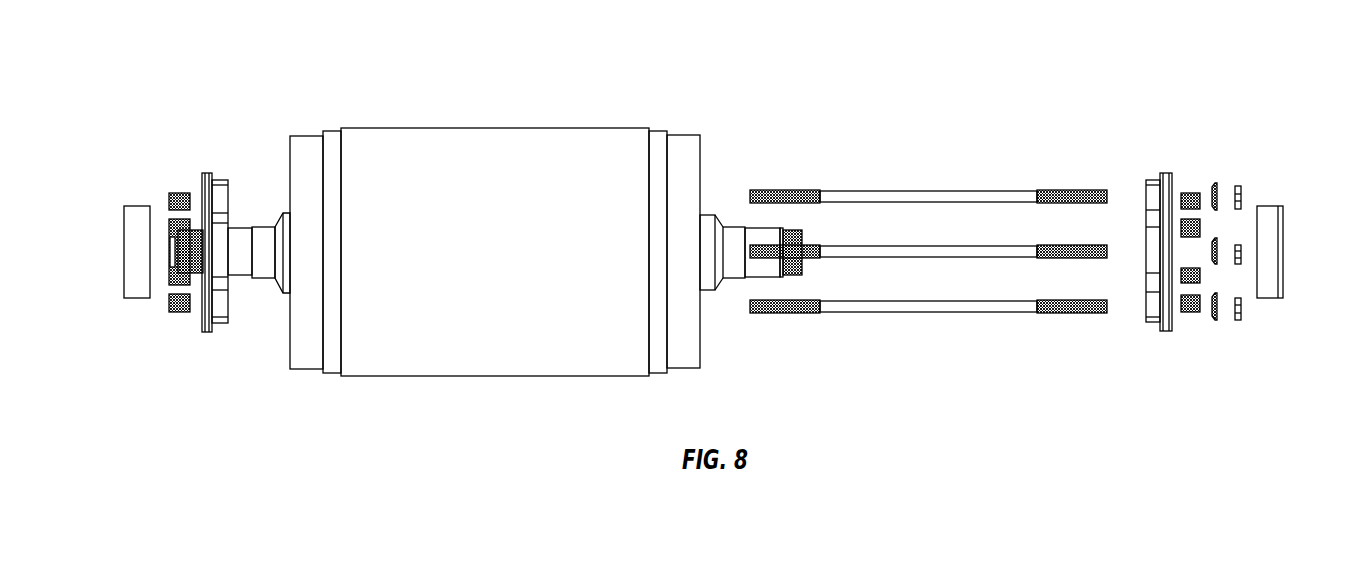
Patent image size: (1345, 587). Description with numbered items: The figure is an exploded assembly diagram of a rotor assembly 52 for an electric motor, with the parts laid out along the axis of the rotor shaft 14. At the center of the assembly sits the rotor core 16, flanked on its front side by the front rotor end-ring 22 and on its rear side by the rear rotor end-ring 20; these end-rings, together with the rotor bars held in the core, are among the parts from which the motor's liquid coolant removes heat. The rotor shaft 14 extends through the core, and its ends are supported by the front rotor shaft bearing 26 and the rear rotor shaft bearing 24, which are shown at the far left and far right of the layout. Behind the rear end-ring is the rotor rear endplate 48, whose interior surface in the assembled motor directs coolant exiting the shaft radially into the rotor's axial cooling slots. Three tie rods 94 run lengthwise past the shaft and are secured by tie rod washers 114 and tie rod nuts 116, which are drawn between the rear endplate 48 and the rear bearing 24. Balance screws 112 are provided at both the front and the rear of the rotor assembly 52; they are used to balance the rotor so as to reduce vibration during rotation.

The rotor assembly 52 is at (856, 47).
The front rotor shaft bearing 26 is at (133, 206).
The balance screws 112 is at (177, 193).
The rotor shaft 14 is at (240, 228).
The front rotor end-ring 22 is at (307, 136).
The rotor core 16 is at (495, 376).
The rear rotor end-ring 20 is at (680, 135).
The tie rods 94 is at (910, 305).
The rotor rear endplate 48 is at (1150, 180).
The tie rod washers 114 is at (1214, 183).
The tie rod nuts 116 is at (1241, 197).
The rear rotor shaft bearing 24 is at (1270, 298).